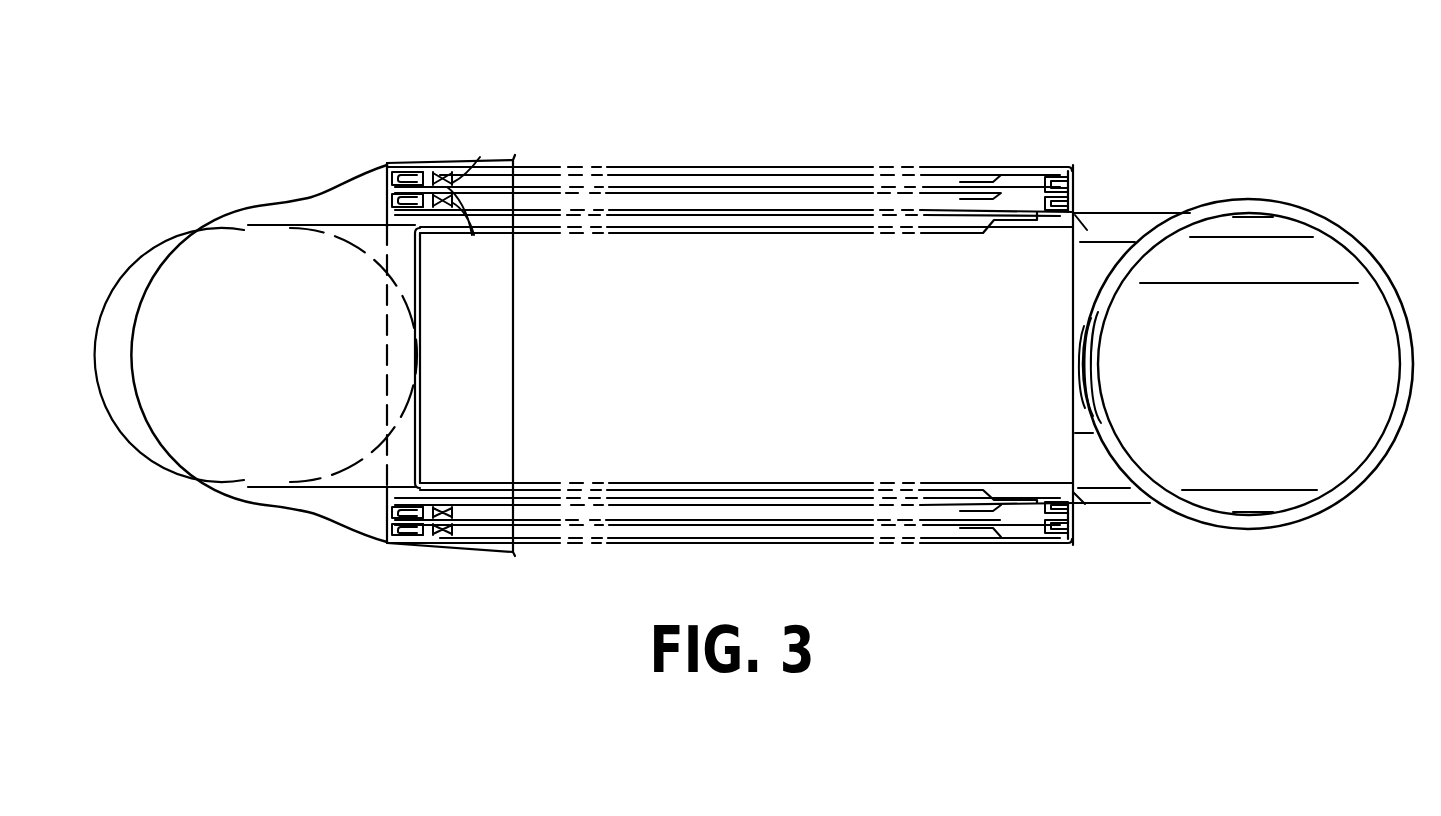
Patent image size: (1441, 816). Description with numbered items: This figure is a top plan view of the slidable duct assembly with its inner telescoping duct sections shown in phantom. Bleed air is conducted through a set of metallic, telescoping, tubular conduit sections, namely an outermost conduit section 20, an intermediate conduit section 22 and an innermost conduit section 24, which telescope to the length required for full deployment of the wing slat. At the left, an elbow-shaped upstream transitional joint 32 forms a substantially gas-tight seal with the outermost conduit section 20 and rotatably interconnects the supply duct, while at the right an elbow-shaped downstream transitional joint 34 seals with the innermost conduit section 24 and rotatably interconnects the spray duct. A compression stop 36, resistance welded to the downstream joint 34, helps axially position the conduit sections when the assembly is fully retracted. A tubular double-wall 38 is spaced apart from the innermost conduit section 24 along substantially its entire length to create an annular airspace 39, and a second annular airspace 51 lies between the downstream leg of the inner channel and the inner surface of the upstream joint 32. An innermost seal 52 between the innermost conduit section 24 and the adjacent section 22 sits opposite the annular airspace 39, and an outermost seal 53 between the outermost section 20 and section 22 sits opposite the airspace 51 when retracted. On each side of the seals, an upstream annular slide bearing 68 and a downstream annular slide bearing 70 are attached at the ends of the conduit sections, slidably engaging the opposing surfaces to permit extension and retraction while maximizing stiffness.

The outermost conduit section 20 is at (818, 167).
The conduit section 22 is at (648, 167).
The innermost conduit section 24 is at (829, 218).
The upstream transitional joint 32 is at (314, 526).
The downstream transitional joint 34 is at (1377, 267).
The compression stop 36 is at (1090, 334).
The tubular double-wall 38 is at (747, 492).
The annular airspace 39 is at (680, 483).
The second annular airspace 51 is at (352, 510).
The innermost seal 52 is at (474, 218).
The outermost seal 53 is at (460, 183).
The upstream annular slide bearing 68 is at (422, 172).
The downstream annular slide bearing 70 is at (1031, 192).